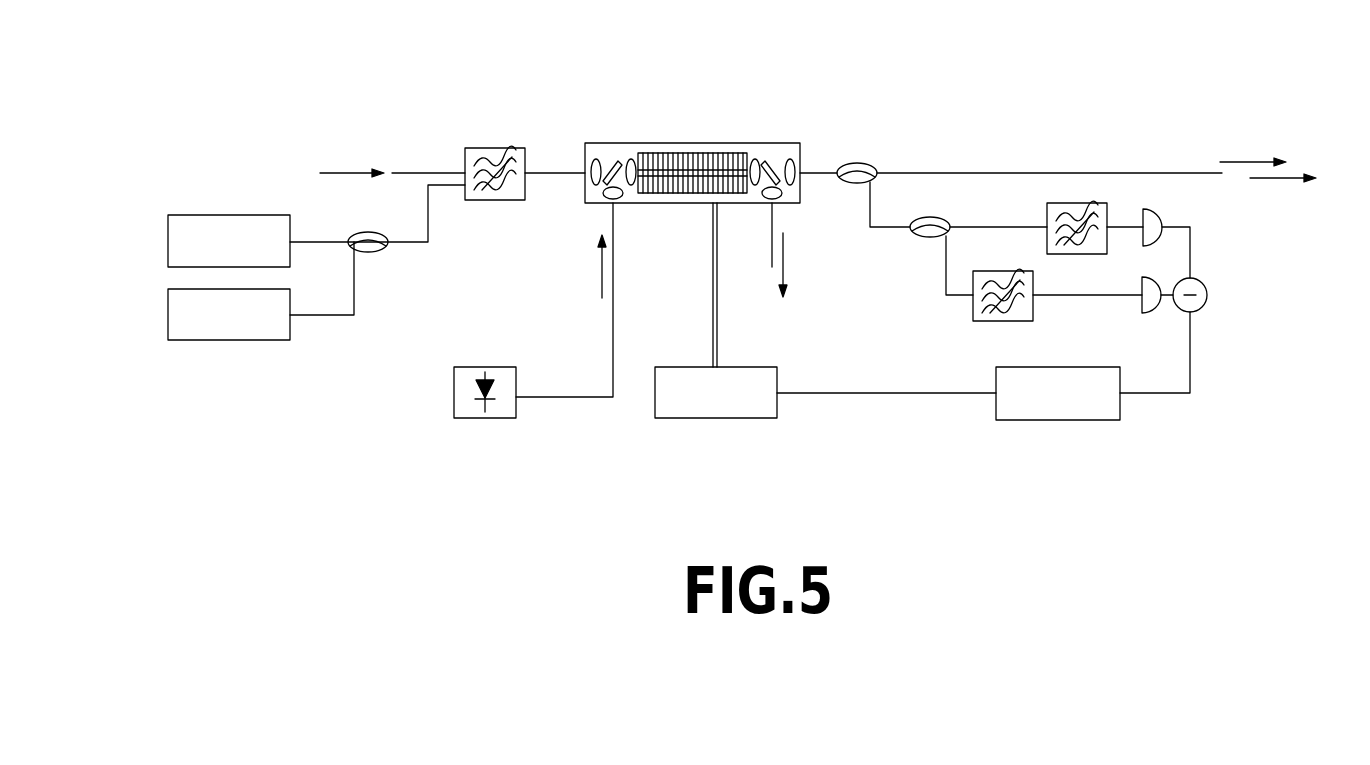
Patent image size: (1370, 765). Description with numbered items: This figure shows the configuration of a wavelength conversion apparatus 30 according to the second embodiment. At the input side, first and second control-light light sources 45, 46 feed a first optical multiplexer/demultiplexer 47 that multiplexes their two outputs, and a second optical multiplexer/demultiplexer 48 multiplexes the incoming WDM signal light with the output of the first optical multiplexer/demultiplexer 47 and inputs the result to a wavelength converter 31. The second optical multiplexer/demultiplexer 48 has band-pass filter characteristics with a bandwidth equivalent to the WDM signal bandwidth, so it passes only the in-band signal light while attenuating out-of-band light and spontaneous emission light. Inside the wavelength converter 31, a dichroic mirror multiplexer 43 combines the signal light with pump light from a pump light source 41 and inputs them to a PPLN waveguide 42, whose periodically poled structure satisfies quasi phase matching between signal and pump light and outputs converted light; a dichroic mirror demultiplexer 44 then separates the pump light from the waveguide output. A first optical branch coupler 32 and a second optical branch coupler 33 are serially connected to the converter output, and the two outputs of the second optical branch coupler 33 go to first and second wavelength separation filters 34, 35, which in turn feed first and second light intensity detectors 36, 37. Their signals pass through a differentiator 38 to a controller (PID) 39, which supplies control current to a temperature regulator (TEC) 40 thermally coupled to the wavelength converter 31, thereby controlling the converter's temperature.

The wavelength conversion apparatus 30 is at (914, 56).
The wavelength converter 31 is at (662, 142).
The first optical branch coupler 32 is at (860, 164).
The second optical branch coupler 33 is at (940, 218).
The first wavelength separation filter 34 is at (1046, 218).
The second wavelength separation filter 35 is at (970, 310).
The first light intensity detector 36 is at (1160, 214).
The second light intensity detector 37 is at (1150, 313).
The differentiator 38 is at (1207, 295).
The controller (PID) 39 is at (1091, 367).
The temperature regulator (TEC) 40 is at (754, 367).
The pump light source 41 is at (487, 367).
The PPLN waveguide 42 is at (710, 143).
The dichroic mirror multiplexer 43 is at (613, 158).
The dichroic mirror demultiplexer 44 is at (774, 158).
The first control-light light source 45 is at (232, 215).
The second control-light light source 46 is at (226, 340).
The first optical multiplexer/demultiplexer 47 is at (366, 232).
The second optical multiplexer/demultiplexer 48 is at (499, 147).